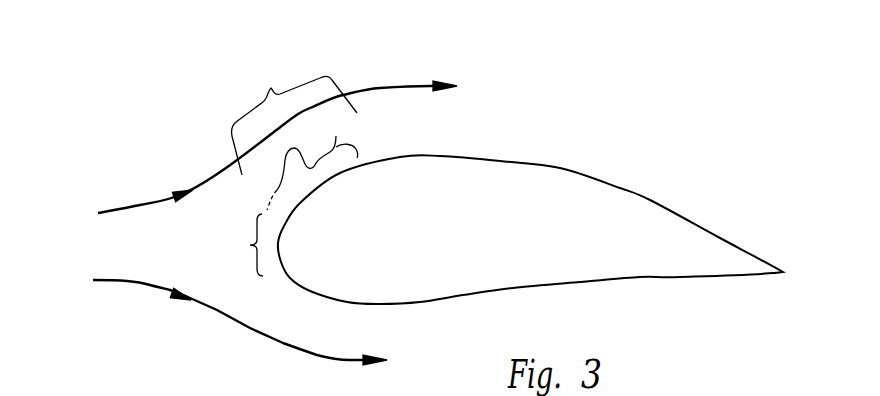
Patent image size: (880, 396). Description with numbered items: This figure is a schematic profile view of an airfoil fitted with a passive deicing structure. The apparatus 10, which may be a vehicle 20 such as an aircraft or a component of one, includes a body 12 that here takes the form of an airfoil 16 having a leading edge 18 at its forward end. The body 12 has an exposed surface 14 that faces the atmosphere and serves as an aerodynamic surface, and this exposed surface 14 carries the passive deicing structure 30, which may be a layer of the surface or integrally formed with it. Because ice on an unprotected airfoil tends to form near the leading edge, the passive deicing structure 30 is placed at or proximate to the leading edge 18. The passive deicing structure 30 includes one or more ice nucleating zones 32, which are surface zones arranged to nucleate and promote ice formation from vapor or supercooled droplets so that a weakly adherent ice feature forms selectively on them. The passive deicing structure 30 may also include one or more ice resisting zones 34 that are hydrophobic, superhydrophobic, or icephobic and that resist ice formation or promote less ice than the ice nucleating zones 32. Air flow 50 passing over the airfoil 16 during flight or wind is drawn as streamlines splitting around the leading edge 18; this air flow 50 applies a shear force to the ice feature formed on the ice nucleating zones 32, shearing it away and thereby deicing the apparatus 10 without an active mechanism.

The apparatus 10 is at (587, 82).
The body 12 is at (561, 167).
The exposed surface 14 is at (431, 156).
The airfoil 16 is at (651, 198).
The leading edge 18 is at (249, 245).
The vehicle 20 is at (653, 85).
The passive deicing structure 30 is at (271, 88).
The ice nucleating zone 32 is at (301, 167).
The ice resisting zone 34 is at (336, 147).
The air flow 50 is at (140, 205).